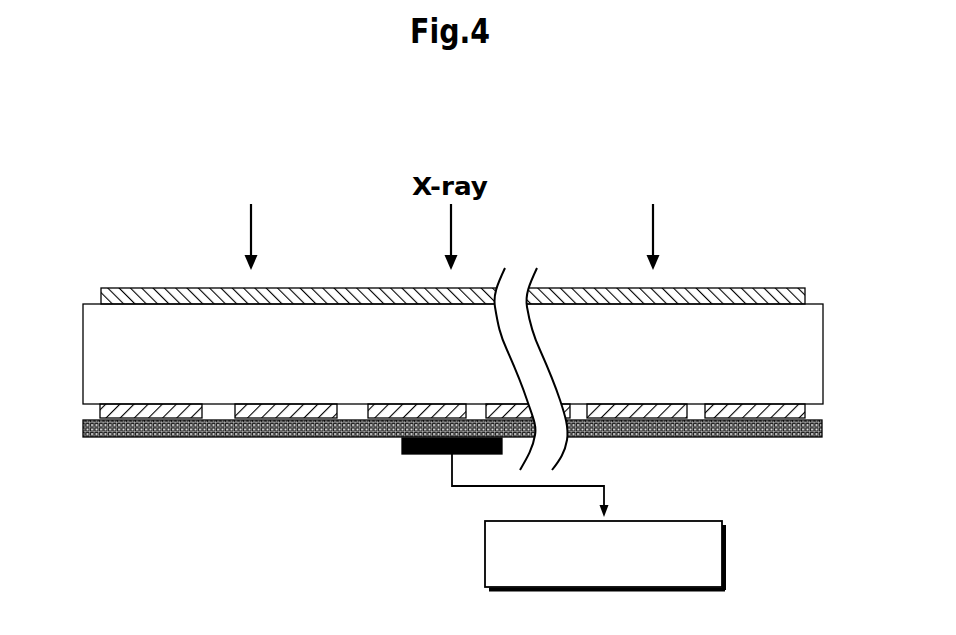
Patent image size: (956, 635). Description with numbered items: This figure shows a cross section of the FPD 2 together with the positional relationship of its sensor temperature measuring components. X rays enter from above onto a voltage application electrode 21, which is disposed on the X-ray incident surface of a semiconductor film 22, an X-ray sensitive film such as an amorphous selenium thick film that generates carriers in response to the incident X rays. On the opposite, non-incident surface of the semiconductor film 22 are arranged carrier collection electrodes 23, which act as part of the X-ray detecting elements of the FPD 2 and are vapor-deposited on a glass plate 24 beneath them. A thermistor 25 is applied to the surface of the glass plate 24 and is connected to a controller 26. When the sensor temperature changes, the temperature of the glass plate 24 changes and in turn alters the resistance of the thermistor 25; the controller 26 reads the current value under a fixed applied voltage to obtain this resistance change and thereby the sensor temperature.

The FPD 2 is at (691, 262).
The voltage application electrode 21 is at (195, 288).
The semiconductor film 22 is at (309, 333).
The carrier collection electrodes 23 is at (152, 418).
The glass plate 24 is at (282, 428).
The thermistor 25 is at (428, 454).
The controller 26 is at (495, 549).